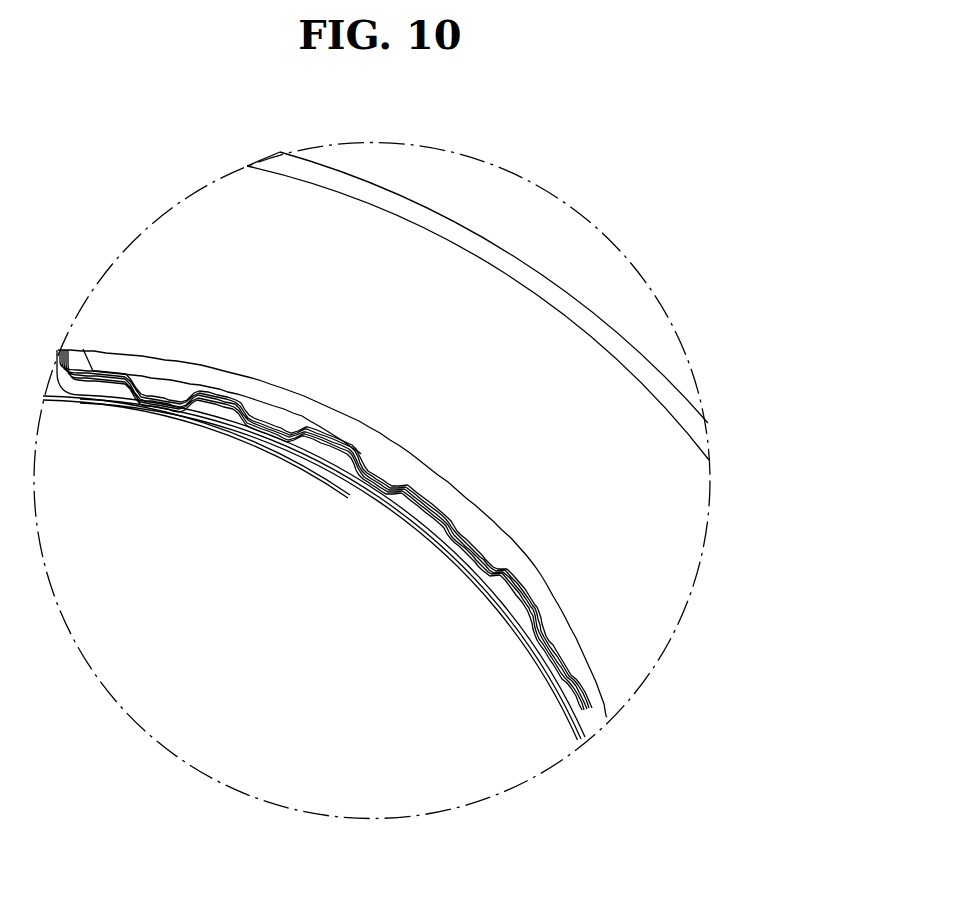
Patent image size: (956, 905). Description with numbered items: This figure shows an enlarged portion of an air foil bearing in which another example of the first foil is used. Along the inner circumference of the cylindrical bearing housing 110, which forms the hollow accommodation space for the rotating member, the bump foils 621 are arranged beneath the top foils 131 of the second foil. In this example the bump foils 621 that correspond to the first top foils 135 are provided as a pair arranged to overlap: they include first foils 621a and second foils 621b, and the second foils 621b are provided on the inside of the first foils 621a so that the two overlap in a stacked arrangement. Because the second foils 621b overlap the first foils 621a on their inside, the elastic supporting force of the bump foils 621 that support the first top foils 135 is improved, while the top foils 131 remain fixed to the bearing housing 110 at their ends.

The bearing housing 110 is at (489, 282).
The bump foils 621 is at (326, 479).
The first foils 621a is at (211, 403).
The second foils 621b is at (277, 427).
The top foil 131 is at (279, 460).
The first top foils 135 is at (314, 545).